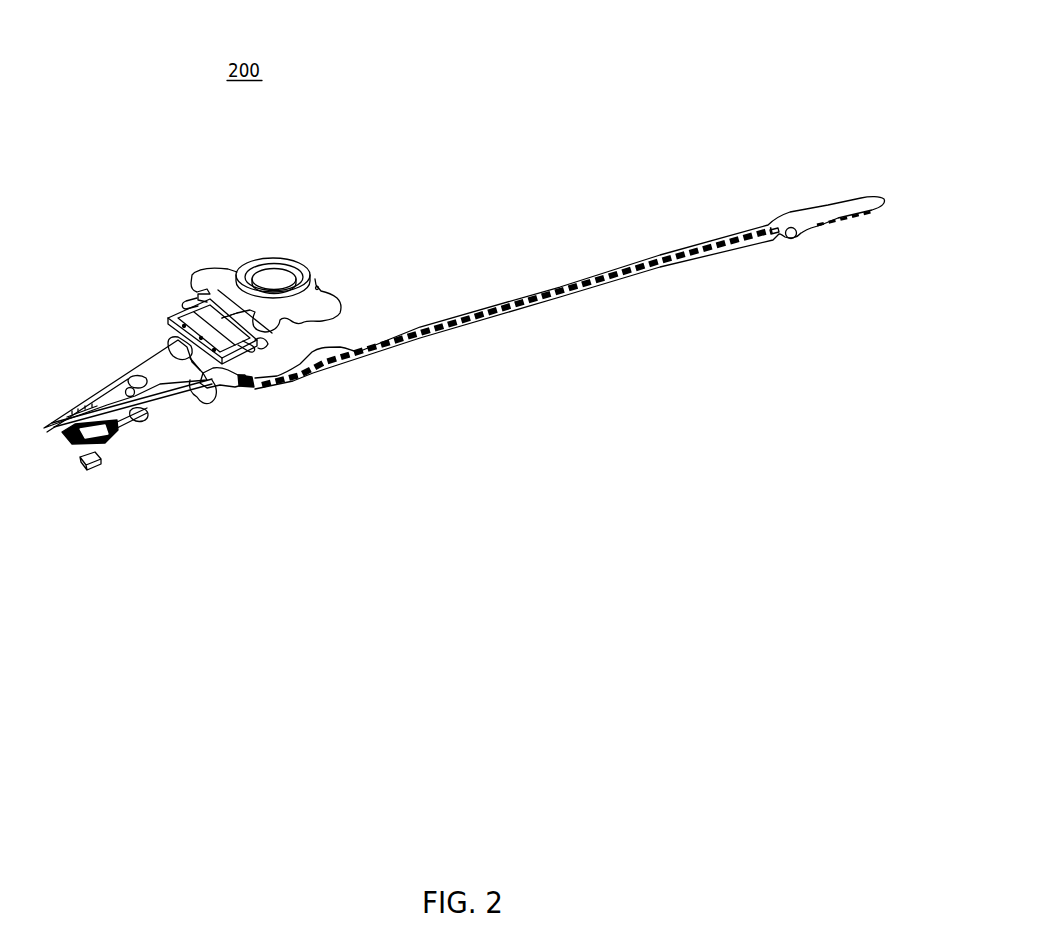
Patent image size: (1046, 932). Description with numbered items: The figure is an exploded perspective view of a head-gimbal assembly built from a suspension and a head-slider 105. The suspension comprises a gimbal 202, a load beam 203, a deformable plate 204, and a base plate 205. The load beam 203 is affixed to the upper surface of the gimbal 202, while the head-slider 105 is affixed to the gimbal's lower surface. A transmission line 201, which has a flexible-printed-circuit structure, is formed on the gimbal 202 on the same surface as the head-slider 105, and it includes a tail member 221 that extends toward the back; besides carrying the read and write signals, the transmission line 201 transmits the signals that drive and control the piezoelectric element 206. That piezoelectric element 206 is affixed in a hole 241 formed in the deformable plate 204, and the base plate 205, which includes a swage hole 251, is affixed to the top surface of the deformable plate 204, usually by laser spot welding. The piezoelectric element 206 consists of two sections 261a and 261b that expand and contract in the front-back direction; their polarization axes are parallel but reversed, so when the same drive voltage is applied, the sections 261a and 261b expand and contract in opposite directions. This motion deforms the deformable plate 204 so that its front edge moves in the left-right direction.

The head-slider 105 is at (98, 470).
The transmission line 201 is at (234, 382).
The gimbal 202 is at (165, 404).
The load beam 203 is at (192, 397).
The deformable plate 204 is at (260, 384).
The base plate 205 is at (237, 270).
The piezoelectric element 206 is at (216, 305).
The tail member 221 is at (478, 308).
The hole 241 is at (222, 318).
The swage hole 251 is at (283, 259).
The first section of piezoelectric element 261a is at (288, 326).
The second section of piezoelectric element 261b is at (184, 303).